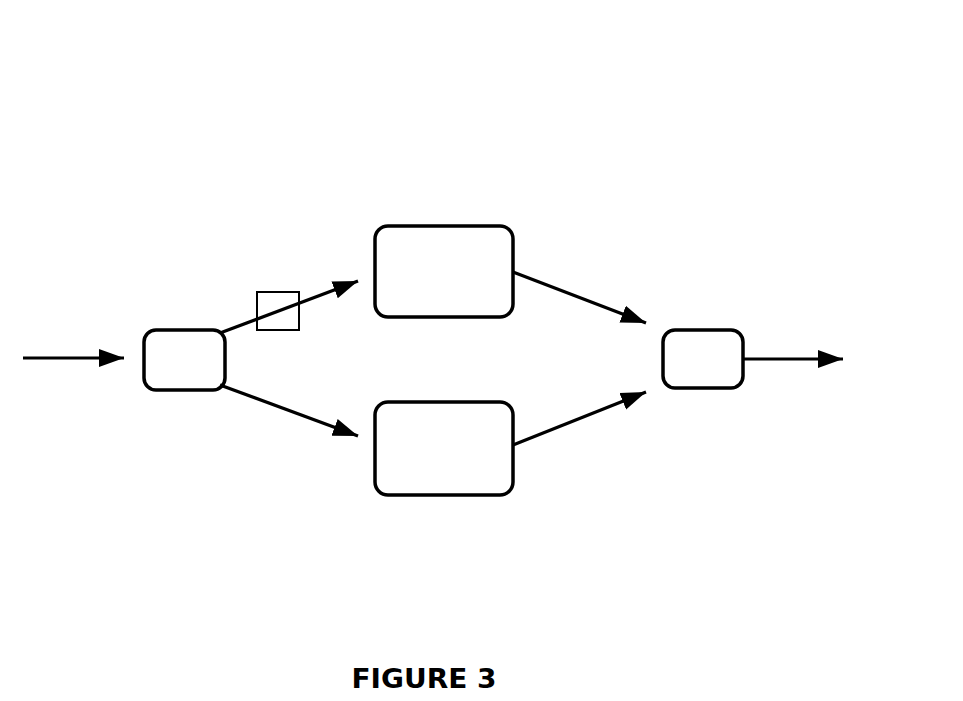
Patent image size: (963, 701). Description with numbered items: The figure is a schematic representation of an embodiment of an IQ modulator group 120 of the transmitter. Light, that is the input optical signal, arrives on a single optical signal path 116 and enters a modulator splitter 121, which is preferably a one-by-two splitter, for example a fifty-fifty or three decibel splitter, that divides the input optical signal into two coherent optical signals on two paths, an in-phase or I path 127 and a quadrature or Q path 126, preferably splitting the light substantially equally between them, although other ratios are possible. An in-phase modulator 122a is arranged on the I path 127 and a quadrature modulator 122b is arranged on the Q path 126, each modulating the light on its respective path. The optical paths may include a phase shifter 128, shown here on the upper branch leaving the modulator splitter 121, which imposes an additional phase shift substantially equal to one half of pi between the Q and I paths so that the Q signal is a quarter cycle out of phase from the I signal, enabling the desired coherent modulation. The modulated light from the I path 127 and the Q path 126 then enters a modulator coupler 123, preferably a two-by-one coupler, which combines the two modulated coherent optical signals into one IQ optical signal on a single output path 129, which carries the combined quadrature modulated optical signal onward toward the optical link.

The IQ modulator group 120 is at (192, 48).
The optical signal path 116 is at (86, 314).
The modulator splitter 121 is at (184, 360).
The phase shifter 128 is at (250, 295).
The in-phase modulator 122a is at (366, 279).
The quadrature modulator 122b is at (366, 440).
The modulator coupler 123 is at (628, 358).
The I path 127 is at (586, 202).
The Q path 126 is at (279, 510).
The output path 129 is at (794, 384).